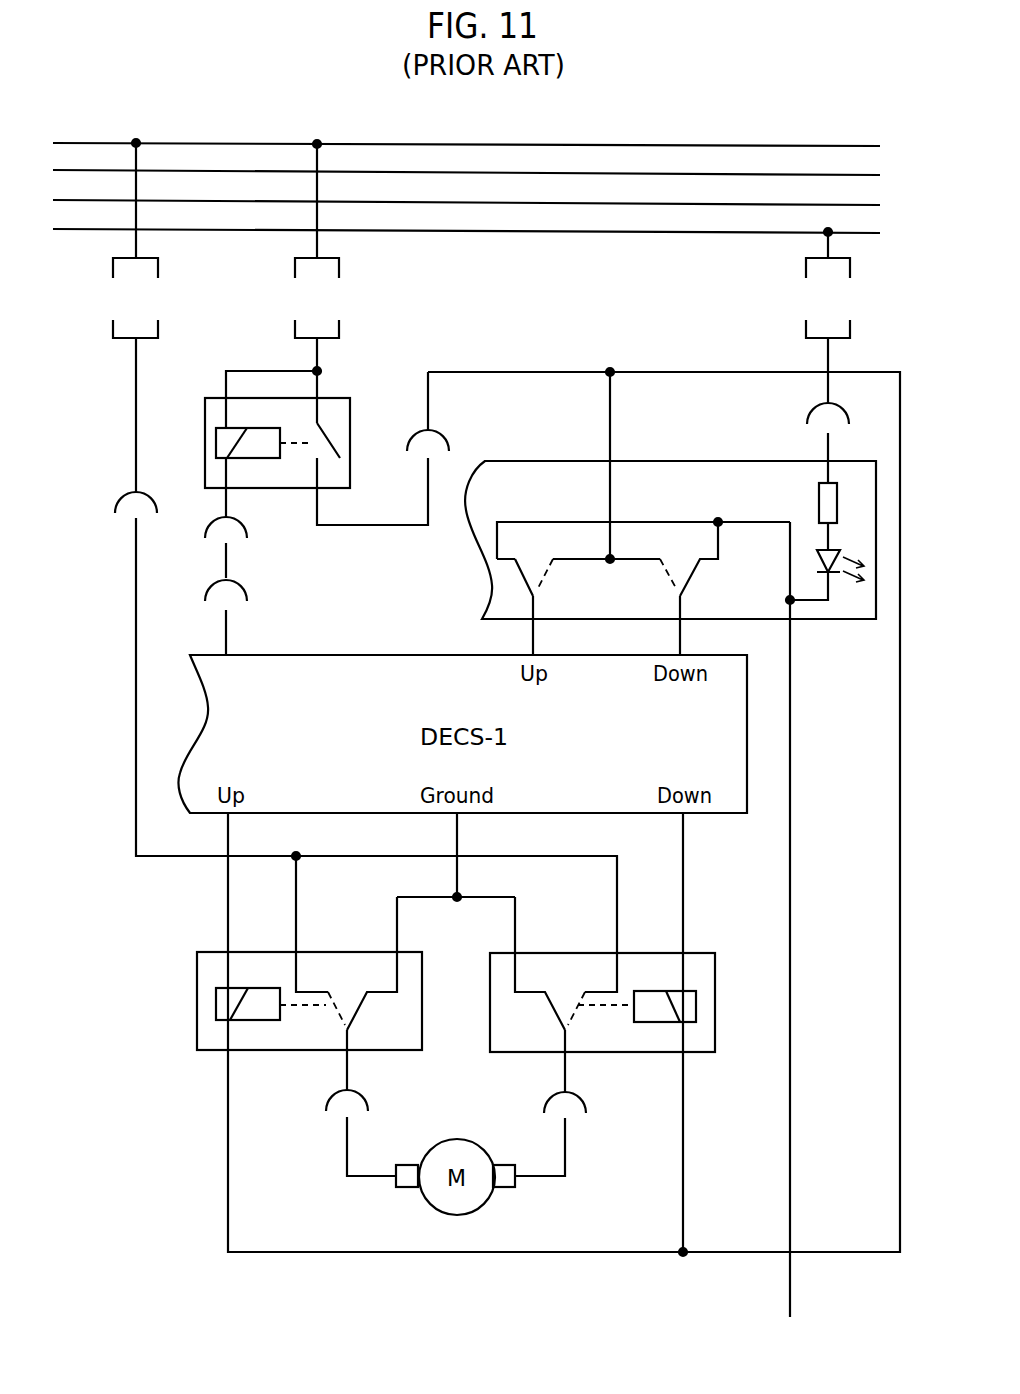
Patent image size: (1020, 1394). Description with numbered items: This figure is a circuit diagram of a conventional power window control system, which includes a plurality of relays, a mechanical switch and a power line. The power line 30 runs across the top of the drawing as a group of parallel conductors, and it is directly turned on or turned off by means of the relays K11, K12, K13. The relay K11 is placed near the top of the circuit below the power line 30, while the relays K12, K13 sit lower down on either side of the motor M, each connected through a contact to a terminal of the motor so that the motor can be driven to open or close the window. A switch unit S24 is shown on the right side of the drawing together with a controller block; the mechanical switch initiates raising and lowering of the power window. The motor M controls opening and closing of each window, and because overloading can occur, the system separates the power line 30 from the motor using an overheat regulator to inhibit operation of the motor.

The power line 30 is at (87, 141).
The relay K11 is at (294, 446).
The relay K12 is at (286, 1001).
The relay K13 is at (580, 1002).
The switch S24 is at (670, 543).